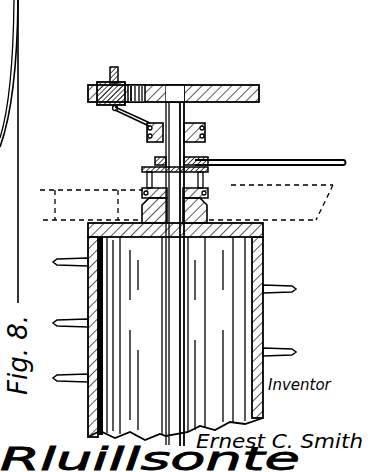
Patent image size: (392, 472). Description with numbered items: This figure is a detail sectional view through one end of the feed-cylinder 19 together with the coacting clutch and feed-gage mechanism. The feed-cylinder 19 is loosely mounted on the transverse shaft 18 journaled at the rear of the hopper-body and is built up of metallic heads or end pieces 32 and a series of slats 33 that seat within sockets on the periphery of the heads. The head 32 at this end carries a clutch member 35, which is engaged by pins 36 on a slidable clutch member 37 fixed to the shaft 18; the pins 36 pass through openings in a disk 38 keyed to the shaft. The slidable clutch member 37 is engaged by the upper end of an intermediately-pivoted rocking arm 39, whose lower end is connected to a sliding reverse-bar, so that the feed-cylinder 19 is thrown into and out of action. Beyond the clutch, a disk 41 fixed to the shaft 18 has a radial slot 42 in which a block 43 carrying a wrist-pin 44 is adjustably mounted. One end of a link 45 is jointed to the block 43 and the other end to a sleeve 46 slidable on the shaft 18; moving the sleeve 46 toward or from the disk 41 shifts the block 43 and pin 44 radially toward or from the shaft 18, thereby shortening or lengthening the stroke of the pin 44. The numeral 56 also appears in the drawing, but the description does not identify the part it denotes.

The transverse shaft 18 is at (162, 265).
The feed-cylinder 19 is at (83, 358).
The head 32 is at (108, 222).
The slat 33 is at (133, 327).
The clutch member 35 is at (140, 212).
The pin 36 is at (195, 193).
The slidable clutch member 37 is at (142, 165).
The disk 38 is at (145, 186).
The rocking arm 39 is at (286, 160).
The disk 41 is at (241, 86).
The radial slot 42 is at (142, 85).
The block 43 is at (108, 84).
The wrist-pin 44 is at (113, 67).
The link 45 is at (126, 112).
The sleeve 46 is at (205, 128).
The phantom outline 56 is at (231, 220).